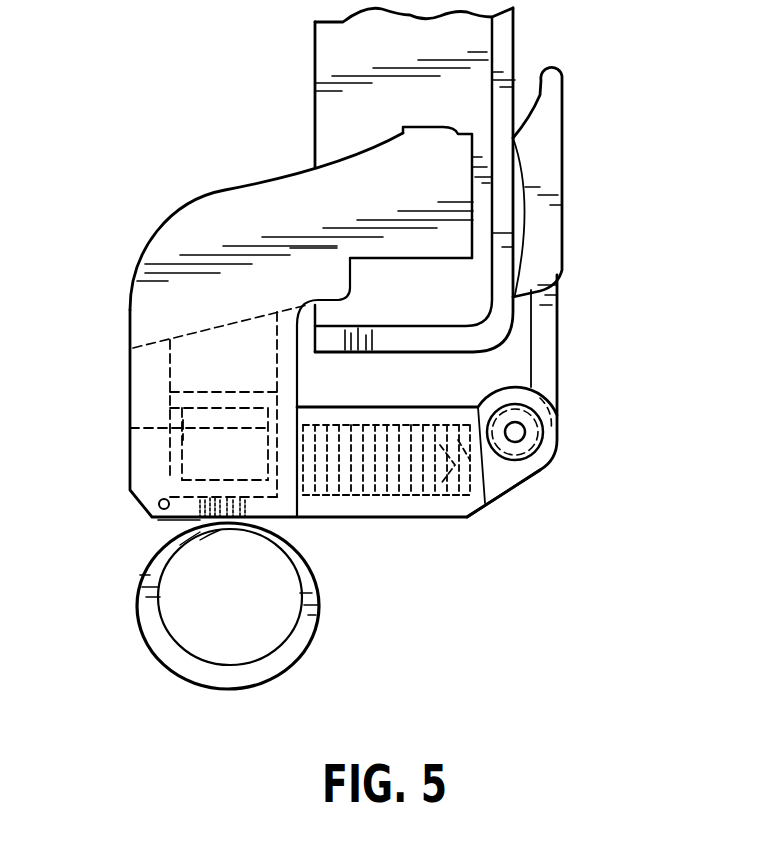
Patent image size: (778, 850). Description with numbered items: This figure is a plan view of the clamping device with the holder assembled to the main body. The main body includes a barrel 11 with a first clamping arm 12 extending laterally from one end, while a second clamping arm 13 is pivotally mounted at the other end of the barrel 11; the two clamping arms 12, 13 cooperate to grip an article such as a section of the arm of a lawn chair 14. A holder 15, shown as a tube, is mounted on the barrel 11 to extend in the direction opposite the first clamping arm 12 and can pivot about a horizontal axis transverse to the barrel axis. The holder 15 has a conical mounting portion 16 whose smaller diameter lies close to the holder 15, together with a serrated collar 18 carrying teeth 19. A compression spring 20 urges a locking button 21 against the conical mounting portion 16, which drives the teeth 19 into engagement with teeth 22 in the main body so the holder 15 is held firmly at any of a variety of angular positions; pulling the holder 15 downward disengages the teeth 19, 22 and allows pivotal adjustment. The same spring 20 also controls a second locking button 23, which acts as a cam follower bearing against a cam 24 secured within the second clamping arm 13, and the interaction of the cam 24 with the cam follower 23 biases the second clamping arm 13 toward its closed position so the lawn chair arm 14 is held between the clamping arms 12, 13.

The barrel 11 is at (375, 508).
The first clamping arm 12 is at (217, 207).
The second clamping arm 13 is at (545, 167).
The arm of a lawn chair 14 is at (473, 45).
The holder 15 is at (145, 620).
The mounting portion 16 is at (130, 428).
The serrated collar 18 is at (172, 518).
The teeth 19 is at (170, 524).
The compression spring 20 is at (407, 490).
The locking button 21 is at (318, 500).
The teeth 22 is at (162, 499).
The locking button 23 is at (470, 507).
The cam 24 is at (530, 433).